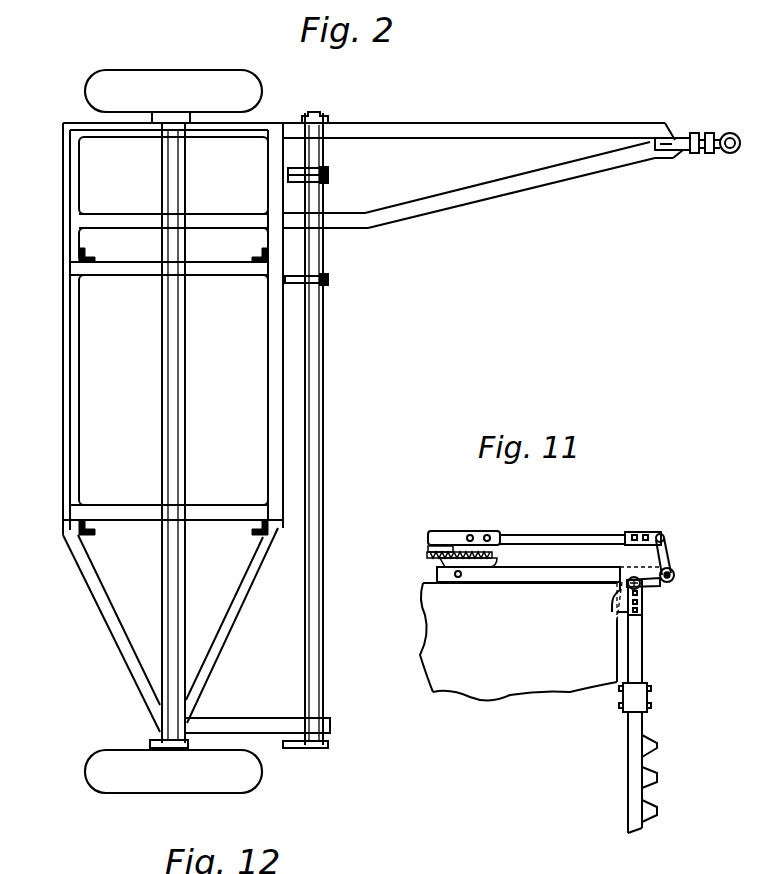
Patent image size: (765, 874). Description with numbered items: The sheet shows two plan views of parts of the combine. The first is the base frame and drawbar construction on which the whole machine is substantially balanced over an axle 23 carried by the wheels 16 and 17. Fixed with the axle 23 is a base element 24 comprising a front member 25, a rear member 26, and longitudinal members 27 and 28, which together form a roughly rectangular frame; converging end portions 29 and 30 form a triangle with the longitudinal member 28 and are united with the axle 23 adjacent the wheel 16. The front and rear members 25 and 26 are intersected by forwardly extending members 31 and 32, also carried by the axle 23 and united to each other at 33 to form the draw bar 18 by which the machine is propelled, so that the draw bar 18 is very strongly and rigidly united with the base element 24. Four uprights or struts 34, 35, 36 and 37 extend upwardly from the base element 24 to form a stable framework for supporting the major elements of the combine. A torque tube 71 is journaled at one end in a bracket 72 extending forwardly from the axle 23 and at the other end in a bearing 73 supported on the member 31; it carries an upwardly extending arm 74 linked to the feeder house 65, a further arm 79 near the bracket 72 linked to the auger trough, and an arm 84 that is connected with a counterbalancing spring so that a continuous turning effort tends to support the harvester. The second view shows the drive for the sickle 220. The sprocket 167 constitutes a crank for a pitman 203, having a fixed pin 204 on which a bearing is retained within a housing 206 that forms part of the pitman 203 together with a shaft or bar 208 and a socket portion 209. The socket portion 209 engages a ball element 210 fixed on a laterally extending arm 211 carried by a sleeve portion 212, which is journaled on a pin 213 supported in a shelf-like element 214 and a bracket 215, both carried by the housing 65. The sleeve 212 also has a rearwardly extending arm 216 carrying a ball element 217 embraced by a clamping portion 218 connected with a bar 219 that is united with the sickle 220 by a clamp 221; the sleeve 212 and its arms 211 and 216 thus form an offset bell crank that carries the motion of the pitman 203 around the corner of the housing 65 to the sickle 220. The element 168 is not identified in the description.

In FIG. 2, the wheel 16 is at (232, 773).
In FIG. 2, the wheel 17 is at (238, 80).
In FIG. 2, the draw bar 18 is at (632, 172).
In FIG. 2, the axle 23 is at (186, 418).
In FIG. 2, the base element 24 is at (277, 447).
In FIG. 2, the front member 25 is at (277, 352).
In FIG. 2, the rear member 26 is at (72, 403).
In FIG. 2, the longitudinal member 27 is at (222, 268).
In FIG. 2, the longitudinal member 28 is at (236, 504).
In FIG. 2, the converging end portion 29 is at (120, 652).
In FIG. 2, the converging end portion 30 is at (210, 663).
In FIG. 2, the forwardly extending member 31 is at (532, 128).
In FIG. 2, the forwardly extending member 32 is at (549, 178).
In FIG. 2, the junction of draw bar members 33 is at (667, 136).
In FIG. 2, the upright 34 is at (92, 249).
In FIG. 2, the upright 35 is at (262, 256).
In FIG. 2, the upright 36 is at (78, 528).
In FIG. 2, the upright 37 is at (263, 528).
In FIG. 2, the torque tube 71 is at (313, 665).
In FIG. 2, the bracket 72 is at (256, 717).
In FIG. 2, the bearing 73 is at (330, 115).
In FIG. 2, the arm 74 is at (330, 268).
In FIG. 2, the arm 79 is at (308, 749).
In FIG. 2, the arm 84 is at (330, 176).
In FIG. 11, the feeder house 65 is at (518, 642).
In FIG. 11, the sprocket 167 is at (490, 552).
In FIG. 11, the wedge 168 is at (497, 572).
In FIG. 11, the pitman 203 is at (580, 532).
In FIG. 11, the pin 204 is at (430, 548).
In FIG. 11, the housing 206 is at (446, 531).
In FIG. 11, the shaft or bar 208 is at (555, 534).
In FIG. 11, the socket portion 209 is at (655, 530).
In FIG. 11, the ball element 210 is at (664, 536).
In FIG. 11, the laterally extending arm 211 is at (672, 556).
In FIG. 11, the sleeve portion 212 is at (676, 575).
In FIG. 11, the pin 213 is at (672, 583).
In FIG. 11, the shelf-like element 214 is at (575, 572).
In FIG. 11, the bracket 215 is at (608, 595).
In FIG. 11, the rearwardly extending arm 216 is at (643, 585).
In FIG. 11, the ball element 217 is at (620, 620).
In FIG. 11, the clamping portion 218 is at (643, 597).
In FIG. 11, the bar 219 is at (643, 625).
In FIG. 11, the sickle 220 is at (646, 745).
In FIG. 11, the clamp 221 is at (650, 692).